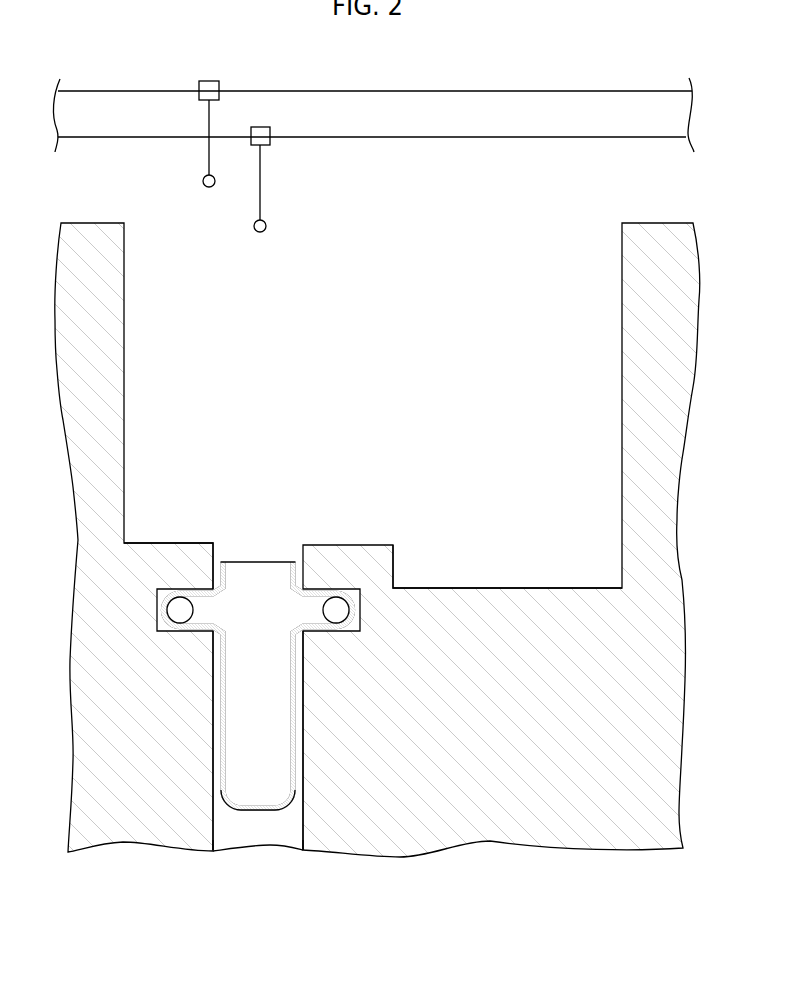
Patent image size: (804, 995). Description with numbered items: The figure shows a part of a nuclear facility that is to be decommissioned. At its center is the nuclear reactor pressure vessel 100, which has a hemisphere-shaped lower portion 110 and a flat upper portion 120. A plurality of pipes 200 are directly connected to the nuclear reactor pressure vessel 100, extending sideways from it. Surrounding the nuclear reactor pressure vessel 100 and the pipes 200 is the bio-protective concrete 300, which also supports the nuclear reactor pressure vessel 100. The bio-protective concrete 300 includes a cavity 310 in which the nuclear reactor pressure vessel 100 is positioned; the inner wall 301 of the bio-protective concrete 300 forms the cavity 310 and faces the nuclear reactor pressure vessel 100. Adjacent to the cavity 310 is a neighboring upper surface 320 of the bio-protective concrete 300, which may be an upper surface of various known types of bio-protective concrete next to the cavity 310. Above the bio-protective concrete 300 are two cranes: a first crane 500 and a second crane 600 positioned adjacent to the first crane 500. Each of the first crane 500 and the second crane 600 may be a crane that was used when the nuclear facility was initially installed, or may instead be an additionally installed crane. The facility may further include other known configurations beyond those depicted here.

The nuclear reactor pressure vessel 100 is at (263, 704).
The lower portion 110 is at (288, 796).
The upper portion 120 is at (263, 561).
The pipes 200 is at (189, 594).
The bio-protective concrete 300 is at (166, 790).
The inner wall 301 is at (215, 556).
The cavity 310 is at (263, 827).
The neighboring upper surface 320 is at (448, 587).
The first crane 500 is at (266, 226).
The second crane 600 is at (208, 187).